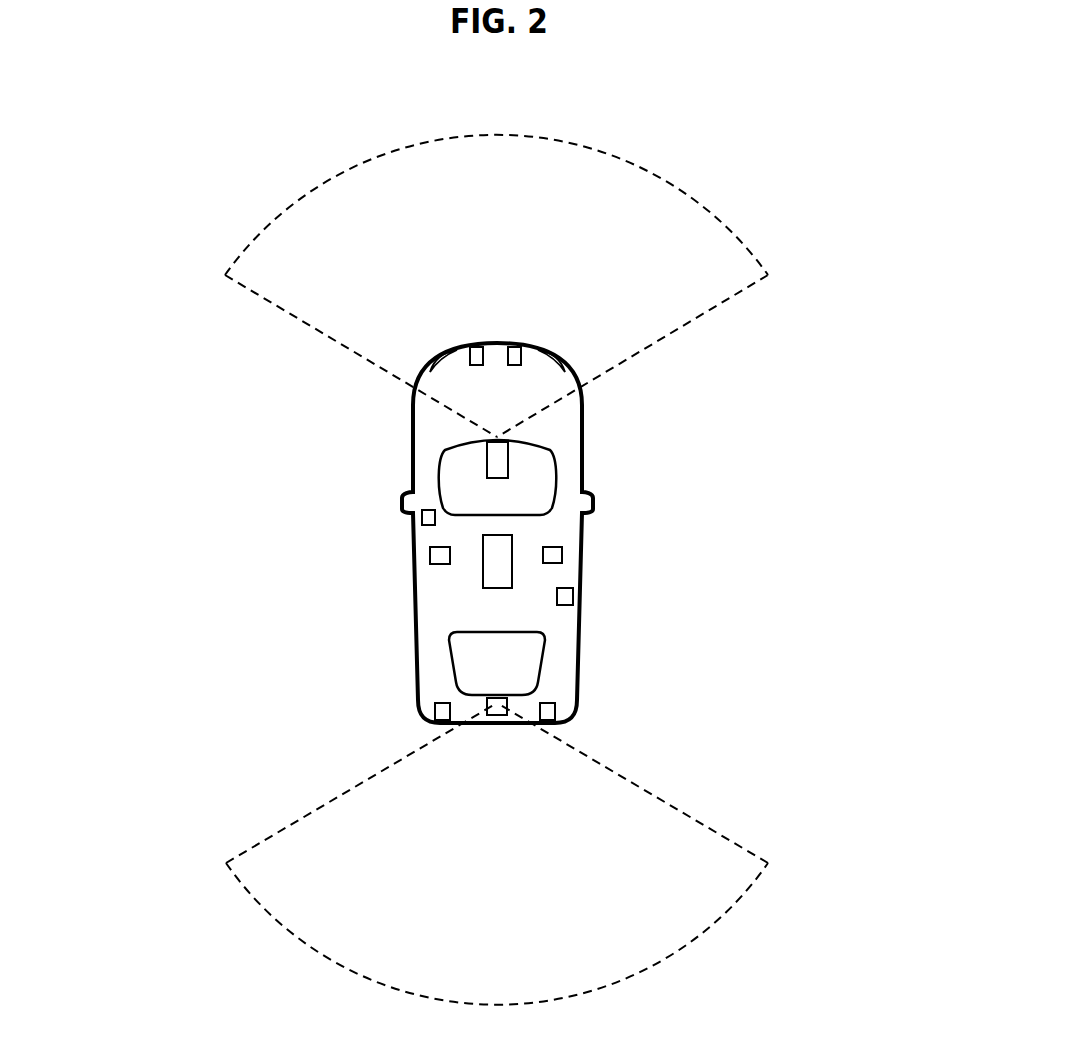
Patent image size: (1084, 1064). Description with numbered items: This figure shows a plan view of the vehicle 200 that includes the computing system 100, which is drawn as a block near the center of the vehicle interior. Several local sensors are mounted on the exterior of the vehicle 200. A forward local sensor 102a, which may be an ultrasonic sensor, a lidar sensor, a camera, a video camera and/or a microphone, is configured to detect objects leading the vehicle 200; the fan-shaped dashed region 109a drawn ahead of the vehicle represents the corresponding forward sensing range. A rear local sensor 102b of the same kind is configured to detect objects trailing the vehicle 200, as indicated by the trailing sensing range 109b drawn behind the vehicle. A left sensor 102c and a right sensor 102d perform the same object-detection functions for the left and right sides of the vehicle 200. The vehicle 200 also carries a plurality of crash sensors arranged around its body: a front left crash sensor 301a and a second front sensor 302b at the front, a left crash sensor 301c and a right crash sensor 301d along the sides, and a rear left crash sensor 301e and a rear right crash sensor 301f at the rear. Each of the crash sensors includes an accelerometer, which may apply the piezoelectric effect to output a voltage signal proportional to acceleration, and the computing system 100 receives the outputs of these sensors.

The vehicle 200 is at (816, 124).
The computing system 100 is at (497, 577).
The local sensor 102a is at (497, 463).
The local sensor 102b is at (497, 712).
The left sensor 102c is at (440, 560).
The right sensor 102d is at (552, 555).
The front left crash sensor 301a is at (476, 358).
The front sensor 302b is at (515, 358).
The left crash sensor 301c is at (428, 518).
The right crash sensor 301d is at (565, 597).
The rear left crash sensor 301e is at (442, 712).
The rear right crash sensor 301f is at (548, 712).
The front field of view 109a is at (747, 292).
The trailing sensing range 109b is at (747, 847).